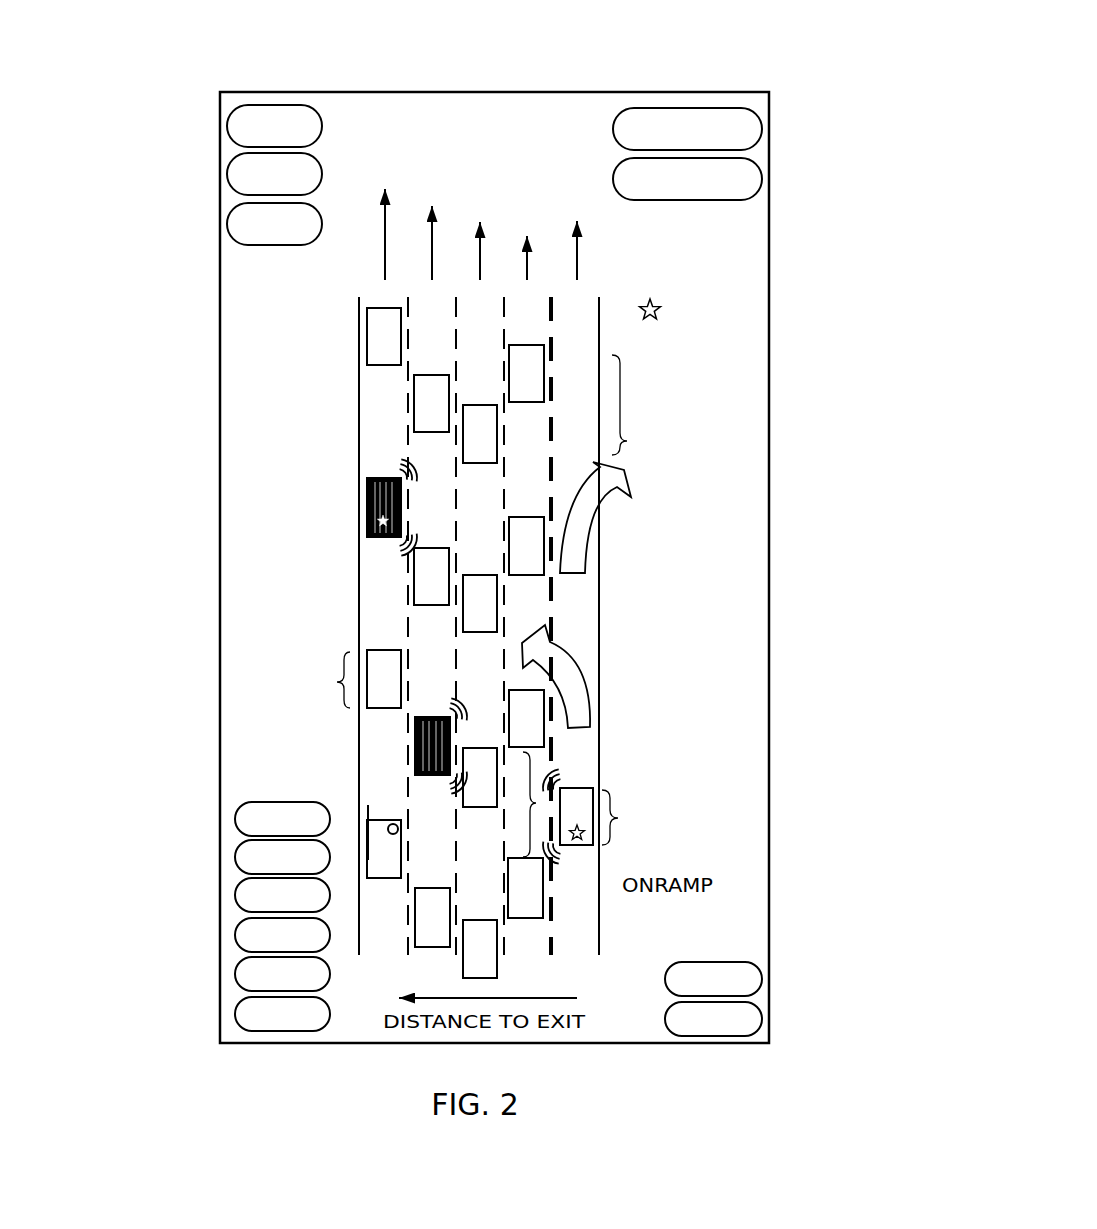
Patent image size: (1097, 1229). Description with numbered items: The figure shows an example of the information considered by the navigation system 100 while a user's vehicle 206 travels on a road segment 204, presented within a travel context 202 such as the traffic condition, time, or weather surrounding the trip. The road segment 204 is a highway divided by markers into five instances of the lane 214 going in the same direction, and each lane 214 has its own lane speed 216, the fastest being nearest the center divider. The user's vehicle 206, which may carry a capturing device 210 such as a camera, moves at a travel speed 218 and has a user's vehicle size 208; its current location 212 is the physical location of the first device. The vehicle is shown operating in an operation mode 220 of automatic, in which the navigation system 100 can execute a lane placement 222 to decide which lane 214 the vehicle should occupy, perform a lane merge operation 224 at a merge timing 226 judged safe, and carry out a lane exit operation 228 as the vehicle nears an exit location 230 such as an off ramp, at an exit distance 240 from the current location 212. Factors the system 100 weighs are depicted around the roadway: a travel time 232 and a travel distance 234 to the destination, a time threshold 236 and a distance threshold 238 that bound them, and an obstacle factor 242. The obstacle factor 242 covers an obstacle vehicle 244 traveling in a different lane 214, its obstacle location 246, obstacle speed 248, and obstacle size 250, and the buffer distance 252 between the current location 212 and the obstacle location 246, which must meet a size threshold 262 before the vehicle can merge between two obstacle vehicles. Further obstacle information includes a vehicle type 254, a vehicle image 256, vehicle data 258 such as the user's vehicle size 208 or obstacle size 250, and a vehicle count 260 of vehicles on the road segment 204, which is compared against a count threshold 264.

The navigation system 100 is at (178, 52).
The travel context 202 is at (697, 90).
The road segment 204 is at (358, 340).
The user's vehicle 206 is at (582, 783).
The user's vehicle size 208 is at (620, 818).
The capturing device 210 is at (391, 826).
The current location 212 is at (577, 846).
The lane 214 is at (385, 420).
The lane speed 216 is at (425, 218).
The travel speed 218 is at (586, 795).
The operation mode 220 is at (750, 117).
The lane placement 222 is at (745, 175).
The lane merge operation 224 is at (562, 640).
The merge timing 226 is at (582, 672).
The lane exit operation 228 is at (623, 470).
The exit location 230 is at (652, 297).
The travel time 232 is at (240, 118).
The travel distance 234 is at (232, 165).
The time threshold 236 is at (282, 819).
The distance threshold 238 is at (282, 857).
The exit distance 240 is at (625, 405).
The obstacle factor 242 is at (282, 895).
The obstacle vehicle 244 is at (367, 508).
The obstacle location 246 is at (368, 522).
The obstacle speed 248 is at (363, 465).
The obstacle size 250 is at (337, 682).
The buffer distance 252 is at (537, 808).
The vehicle type 254 is at (282, 935).
The vehicle image 256 is at (282, 974).
The vehicle data 258 is at (282, 1014).
The vehicle count 260 is at (250, 223).
The size threshold 262 is at (713, 979).
The count threshold 264 is at (713, 1019).